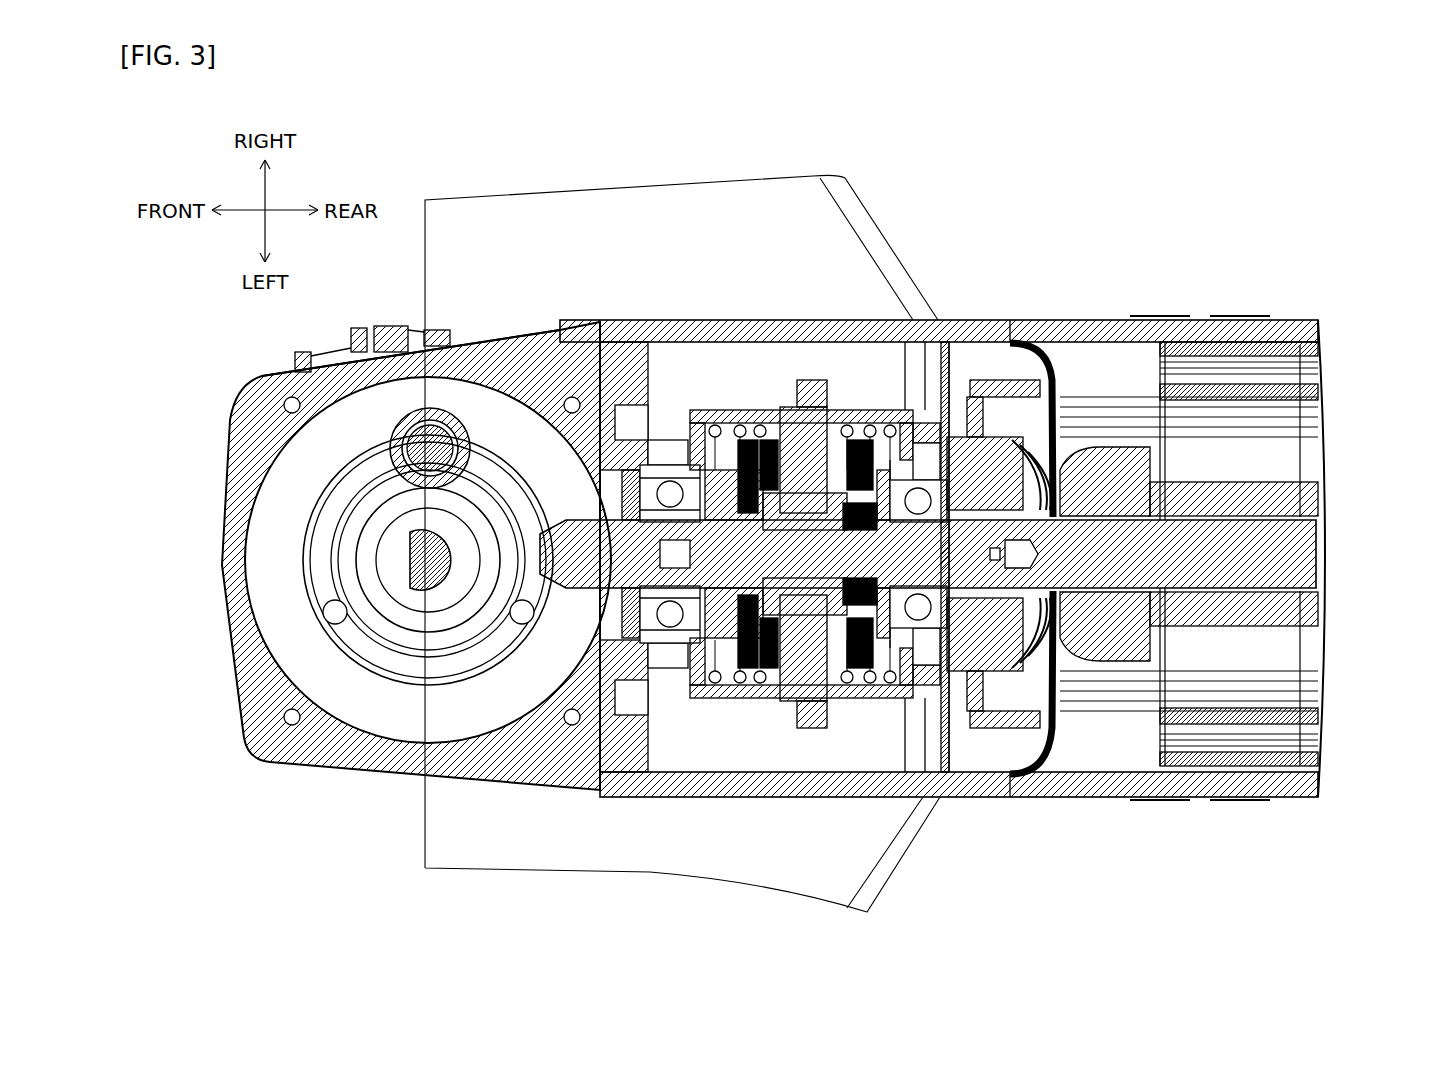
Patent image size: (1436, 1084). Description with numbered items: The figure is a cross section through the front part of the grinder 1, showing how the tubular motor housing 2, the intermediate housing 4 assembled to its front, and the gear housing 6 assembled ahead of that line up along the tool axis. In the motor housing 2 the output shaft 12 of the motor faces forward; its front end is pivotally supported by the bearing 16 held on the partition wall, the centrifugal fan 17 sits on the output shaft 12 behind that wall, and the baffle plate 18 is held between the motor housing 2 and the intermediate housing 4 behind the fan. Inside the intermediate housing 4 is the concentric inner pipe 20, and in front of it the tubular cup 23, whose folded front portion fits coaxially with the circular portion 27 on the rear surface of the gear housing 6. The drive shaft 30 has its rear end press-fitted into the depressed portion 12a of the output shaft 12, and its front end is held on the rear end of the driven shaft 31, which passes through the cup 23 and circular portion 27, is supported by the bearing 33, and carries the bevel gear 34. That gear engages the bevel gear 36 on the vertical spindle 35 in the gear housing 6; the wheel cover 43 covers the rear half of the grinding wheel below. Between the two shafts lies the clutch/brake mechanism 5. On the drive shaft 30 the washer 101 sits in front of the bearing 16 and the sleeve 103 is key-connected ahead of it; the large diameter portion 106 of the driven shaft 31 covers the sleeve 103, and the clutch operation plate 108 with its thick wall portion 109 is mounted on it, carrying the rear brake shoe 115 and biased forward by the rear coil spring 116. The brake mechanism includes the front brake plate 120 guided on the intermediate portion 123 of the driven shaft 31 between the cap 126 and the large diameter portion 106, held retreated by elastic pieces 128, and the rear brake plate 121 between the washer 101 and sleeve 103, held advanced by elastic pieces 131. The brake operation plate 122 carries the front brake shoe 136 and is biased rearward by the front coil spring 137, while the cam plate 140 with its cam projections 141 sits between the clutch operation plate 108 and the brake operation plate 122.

The grinder 1 is at (1207, 190).
The motor housing 2 is at (1245, 320).
The intermediate housing 4 is at (985, 320).
The clutch/brake mechanism 5 is at (818, 300).
The gear housing 6 is at (395, 350).
The output shaft 12 is at (1322, 554).
The depressed portion 12a is at (1015, 570).
The bearing 16 is at (947, 370).
The centrifugal fan 17 is at (1012, 380).
The baffle plate 18 is at (1050, 348).
The inner pipe 20 is at (905, 342).
The cup 23 is at (668, 465).
The circular portion 27 is at (620, 772).
The drive shaft 30 is at (947, 340).
The driven shaft 31 is at (556, 336).
The bearing 33 is at (588, 400).
The bevel gear 34 is at (527, 336).
The spindle 35 is at (420, 552).
The bevel gear 36 is at (335, 358).
The wheel cover 43 is at (588, 205).
The washer 101 is at (920, 630).
The sleeve 103 is at (855, 712).
The large diameter portion 106 is at (760, 700).
The clutch operation plate 108 is at (845, 410).
The thick wall portion 109 is at (790, 712).
The rear brake shoe 115 is at (905, 423).
The rear coil spring 116 is at (925, 342).
The front brake plate 120 is at (745, 700).
The rear brake plate 121 is at (887, 700).
The brake operation plate 122 is at (790, 410).
The intermediate portion 123 is at (622, 640).
The cap 126 is at (655, 440).
The elastic pieces 128 is at (631, 470).
The elastic pieces 131 is at (905, 712).
The front brake shoe 136 is at (745, 440).
The front coil spring 137 is at (705, 420).
The cam plate 140 is at (780, 400).
The cam projections 141 is at (800, 415).